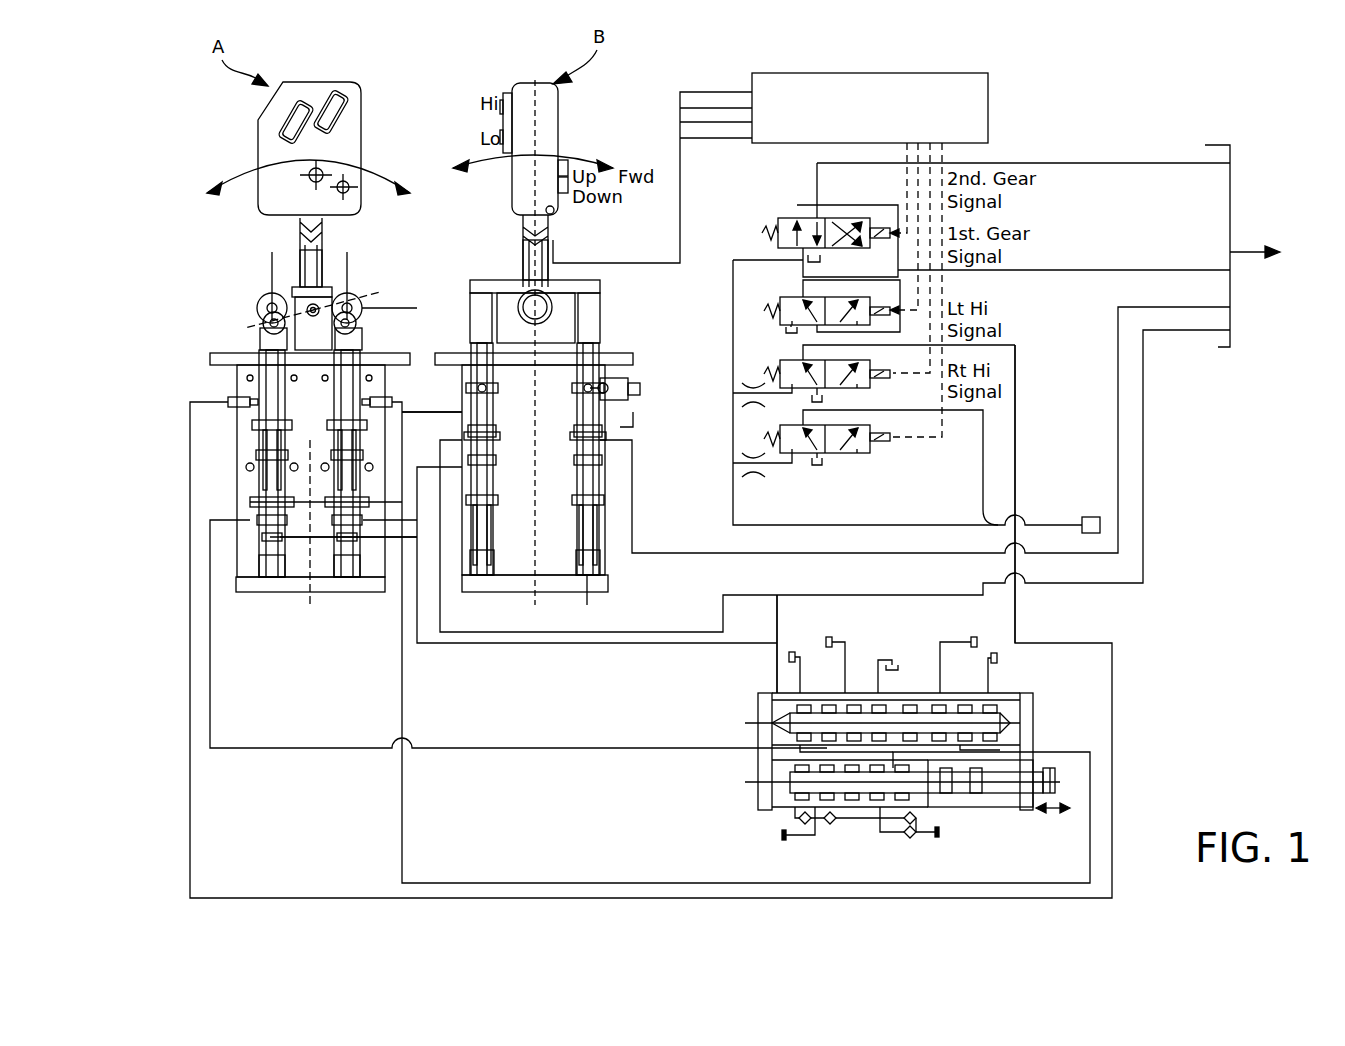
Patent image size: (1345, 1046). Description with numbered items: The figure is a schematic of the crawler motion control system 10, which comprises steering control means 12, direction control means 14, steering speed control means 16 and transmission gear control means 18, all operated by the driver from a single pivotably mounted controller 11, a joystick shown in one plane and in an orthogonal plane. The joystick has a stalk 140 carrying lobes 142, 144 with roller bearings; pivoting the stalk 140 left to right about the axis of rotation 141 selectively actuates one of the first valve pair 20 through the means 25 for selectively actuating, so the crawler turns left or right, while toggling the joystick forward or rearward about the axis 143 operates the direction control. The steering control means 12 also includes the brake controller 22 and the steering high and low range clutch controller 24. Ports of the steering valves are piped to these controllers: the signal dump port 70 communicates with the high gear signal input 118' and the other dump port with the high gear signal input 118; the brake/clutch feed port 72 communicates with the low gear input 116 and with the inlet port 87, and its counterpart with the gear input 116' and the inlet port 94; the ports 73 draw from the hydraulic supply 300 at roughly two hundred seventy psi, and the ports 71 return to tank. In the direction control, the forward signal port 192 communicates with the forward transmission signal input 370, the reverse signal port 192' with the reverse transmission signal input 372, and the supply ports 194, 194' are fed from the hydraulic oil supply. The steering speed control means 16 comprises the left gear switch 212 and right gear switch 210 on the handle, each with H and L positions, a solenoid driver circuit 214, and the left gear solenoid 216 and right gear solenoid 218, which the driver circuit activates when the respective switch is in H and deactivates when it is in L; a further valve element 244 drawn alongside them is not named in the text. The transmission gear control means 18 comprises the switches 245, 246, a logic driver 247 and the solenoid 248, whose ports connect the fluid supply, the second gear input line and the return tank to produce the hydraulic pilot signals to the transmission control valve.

The crawler motion control system 10 is at (1170, 380).
The controller 11 is at (370, 116).
The steering control means 12 is at (226, 286).
The direction control means 14 is at (498, 256).
The steering speed control means 16 is at (318, 82).
The transmission gear control means 18 is at (680, 100).
The first valve pair 20 is at (237, 382).
The brake controller 22 is at (868, 744).
The steering high and low range clutch controller 24 is at (758, 710).
The means for selectively actuating one of the first valve pair 25 is at (327, 275).
The signal dump port 70 is at (232, 402).
The port 71 is at (250, 500).
The brake/clutch feed port 72 is at (215, 520).
The port 73 is at (248, 538).
The inlet port 87 is at (783, 765).
The inlet port 94 is at (895, 765).
The low gear input 116 is at (785, 758).
The gear input 116' is at (1033, 738).
The high gear signal input 118 is at (726, 644).
The high gear signal input 118' is at (1063, 513).
The stalk 140 is at (323, 243).
The axis of rotation 141 is at (313, 310).
The lobe 142 is at (258, 310).
The axis 143 is at (565, 290).
The lobe 144 is at (358, 302).
The forward signal port 192 is at (498, 459).
The reverse signal port 192' is at (572, 459).
The supply port 194 is at (499, 529).
The supply port 194' is at (571, 529).
The right gear switch 210 is at (340, 100).
The left gear switch 212 is at (283, 110).
The solenoid driver circuit 214 is at (852, 72).
The left gear solenoid 216 is at (780, 370).
The right gear solenoid 218 is at (780, 432).
The solenoid valve 244 is at (780, 305).
The switch 245 is at (568, 165).
The switch 246 is at (568, 192).
The logic driver 247 is at (975, 73).
The solenoid 248 is at (780, 220).
The hydraulic supply 300 is at (1100, 525).
The forward transmission signal input 370 is at (1143, 445).
The reverse transmission signal input 372 is at (1118, 430).